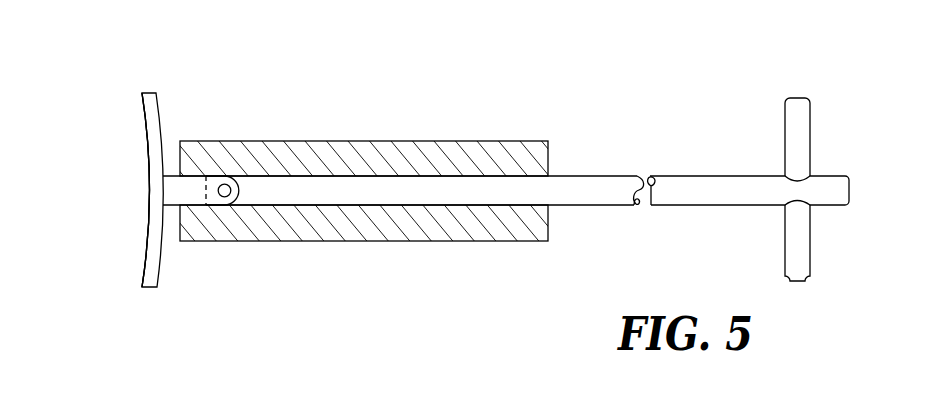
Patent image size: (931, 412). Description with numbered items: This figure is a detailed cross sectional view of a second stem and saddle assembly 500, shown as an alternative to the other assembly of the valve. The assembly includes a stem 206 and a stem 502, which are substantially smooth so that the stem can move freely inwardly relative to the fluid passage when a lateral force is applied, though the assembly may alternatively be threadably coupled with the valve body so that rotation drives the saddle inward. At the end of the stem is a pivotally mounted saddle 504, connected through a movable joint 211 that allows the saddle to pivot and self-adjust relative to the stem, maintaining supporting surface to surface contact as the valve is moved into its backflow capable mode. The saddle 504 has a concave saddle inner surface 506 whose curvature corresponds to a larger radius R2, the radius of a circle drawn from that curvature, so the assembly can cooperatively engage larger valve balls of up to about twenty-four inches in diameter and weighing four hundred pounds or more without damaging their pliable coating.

The second stem and saddle assembly 500 is at (748, 188).
The stem 502 is at (717, 206).
The saddle 504 is at (160, 117).
The saddle inner surface 506 is at (150, 158).
The stem 206 is at (585, 175).
The movable joint 211 is at (225, 184).
The radius R2 is at (63, 249).